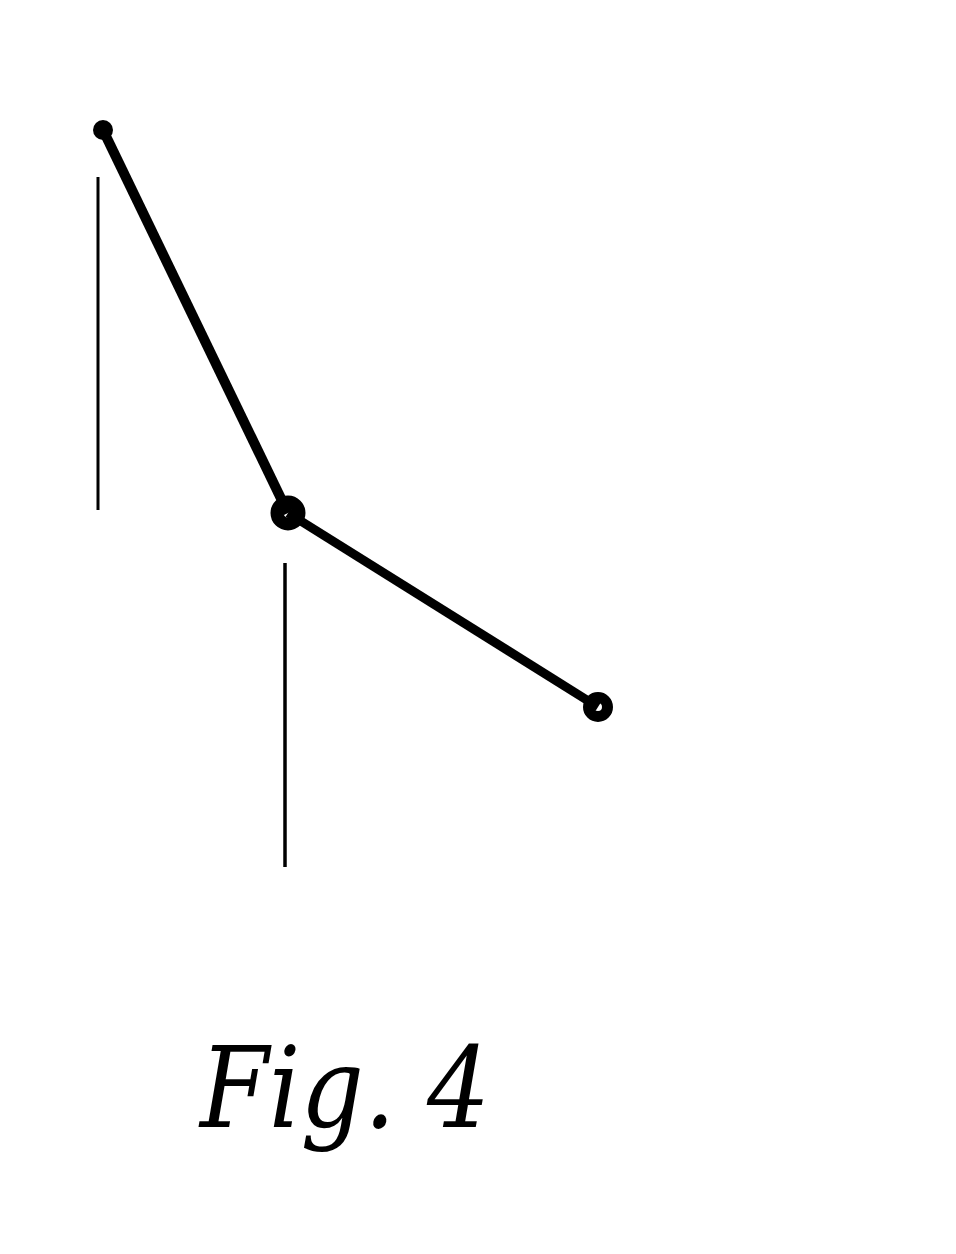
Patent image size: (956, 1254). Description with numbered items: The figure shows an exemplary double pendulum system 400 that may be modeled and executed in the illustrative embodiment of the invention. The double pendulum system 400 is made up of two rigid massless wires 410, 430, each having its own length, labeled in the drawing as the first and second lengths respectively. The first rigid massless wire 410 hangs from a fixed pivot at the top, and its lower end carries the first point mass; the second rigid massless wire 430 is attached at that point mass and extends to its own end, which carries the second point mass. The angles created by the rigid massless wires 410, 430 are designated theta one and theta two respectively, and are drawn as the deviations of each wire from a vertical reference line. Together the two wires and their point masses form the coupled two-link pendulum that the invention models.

The double pendulum system 400 is at (692, 187).
The rigid massless wire 410 is at (150, 213).
The rigid massless wire 430 is at (378, 562).